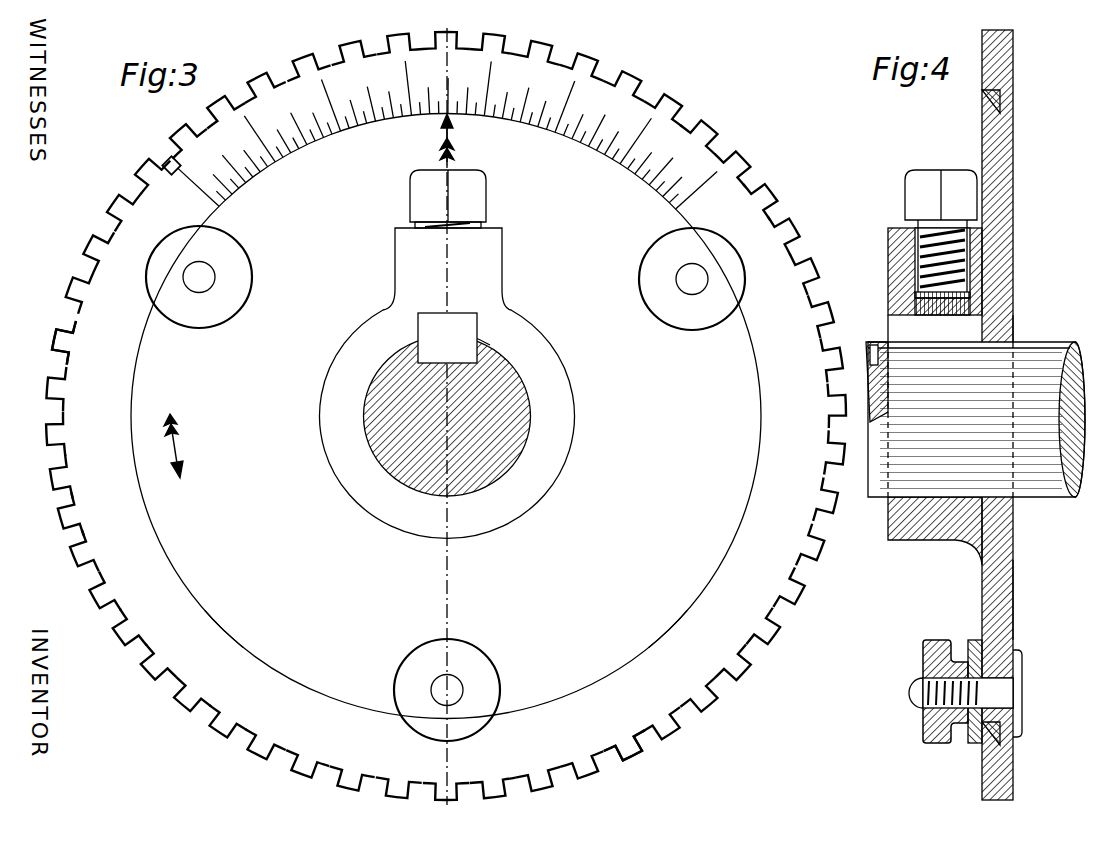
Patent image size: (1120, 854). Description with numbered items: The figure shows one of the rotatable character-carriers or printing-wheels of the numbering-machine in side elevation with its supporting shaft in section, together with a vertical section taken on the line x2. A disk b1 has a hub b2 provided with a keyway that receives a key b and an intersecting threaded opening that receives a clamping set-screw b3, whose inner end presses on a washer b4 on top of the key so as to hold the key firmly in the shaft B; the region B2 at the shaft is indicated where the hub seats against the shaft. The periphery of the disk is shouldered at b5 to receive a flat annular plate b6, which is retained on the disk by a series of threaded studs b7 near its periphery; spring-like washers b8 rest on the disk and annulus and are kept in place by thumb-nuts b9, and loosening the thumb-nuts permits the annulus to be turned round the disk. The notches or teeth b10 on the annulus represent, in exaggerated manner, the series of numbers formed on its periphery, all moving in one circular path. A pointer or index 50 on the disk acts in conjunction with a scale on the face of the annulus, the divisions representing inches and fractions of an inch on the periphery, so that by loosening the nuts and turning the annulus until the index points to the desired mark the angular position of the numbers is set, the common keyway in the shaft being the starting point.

In FIG. 3, the disk b1 is at (150, 462).
In FIG. 4, the disk b1 is at (1015, 596).
In FIG. 3, the hub b2 is at (576, 423).
In FIG. 4, the hub b2 is at (912, 540).
In FIG. 3, the set-screw b3 is at (480, 228).
In FIG. 4, the set-screw b3 is at (986, 238).
In FIG. 4, the washer b4 is at (960, 316).
In FIG. 3, the shoulder b5 is at (716, 569).
In FIG. 4, the shoulder b5 is at (1013, 108).
In FIG. 3, the annular plate b6 is at (186, 577).
In FIG. 4, the annular plate b6 is at (982, 76).
In FIG. 3, the threaded studs b7 is at (680, 291).
In FIG. 4, the threaded studs b7 is at (915, 688).
In FIG. 4, the spring-like washers b8 is at (973, 640).
In FIG. 3, the thumb-nuts b9 is at (230, 312).
In FIG. 4, the thumb-nuts b9 is at (923, 727).
In FIG. 3, the notches or teeth b10 is at (52, 343).
In FIG. 3, the key b is at (452, 326).
In FIG. 4, the key b is at (888, 325).
In FIG. 3, the shaft B is at (507, 470).
In FIG. 4, the shaft B is at (1027, 340).
In FIG. 3, the key seat in shaft B2 is at (500, 352).
In FIG. 4, the key seat in shaft B2 is at (868, 388).
In FIG. 3, the section line x2 is at (439, 415).
In FIG. 3, the pointer or index 50 is at (423, 140).